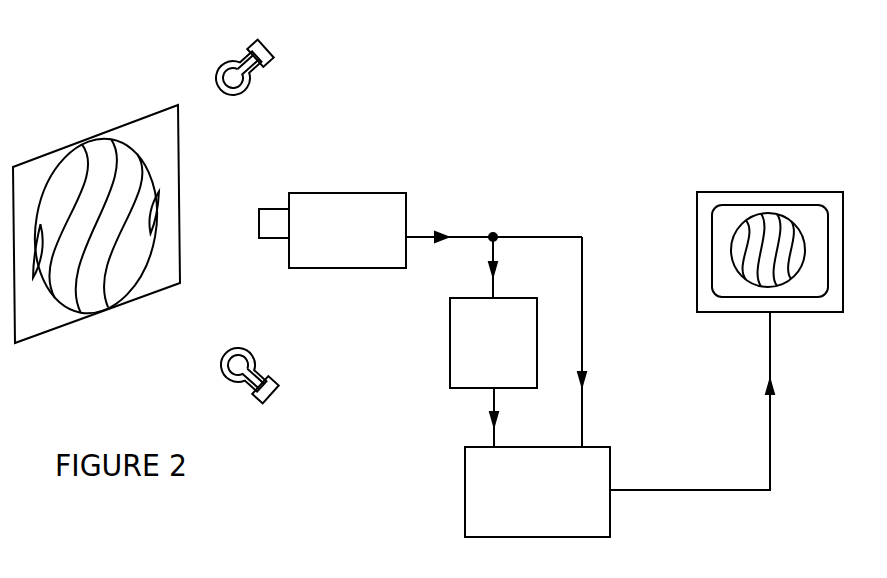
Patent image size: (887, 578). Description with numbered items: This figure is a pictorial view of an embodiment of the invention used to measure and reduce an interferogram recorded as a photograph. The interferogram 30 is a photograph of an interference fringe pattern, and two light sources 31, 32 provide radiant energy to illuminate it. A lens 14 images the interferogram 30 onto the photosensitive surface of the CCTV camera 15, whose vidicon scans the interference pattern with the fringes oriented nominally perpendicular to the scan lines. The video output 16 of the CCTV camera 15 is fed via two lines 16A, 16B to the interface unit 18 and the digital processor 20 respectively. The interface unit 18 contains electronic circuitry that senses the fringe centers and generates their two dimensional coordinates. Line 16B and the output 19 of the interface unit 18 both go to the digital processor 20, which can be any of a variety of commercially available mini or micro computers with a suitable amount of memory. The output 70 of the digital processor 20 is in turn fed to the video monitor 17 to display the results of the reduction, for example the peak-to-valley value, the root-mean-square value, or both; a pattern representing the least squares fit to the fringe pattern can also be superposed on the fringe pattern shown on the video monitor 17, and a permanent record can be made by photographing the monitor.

The interferogram 30 is at (86, 140).
The light source 31 is at (226, 378).
The light source 32 is at (218, 64).
The lens 14 is at (272, 208).
The CCTV camera 15 is at (320, 193).
The video output 16 is at (426, 237).
The line 16A is at (495, 283).
The line 16B is at (583, 324).
The video monitor 17 is at (770, 192).
The interface unit 18 is at (450, 354).
The output 19 is at (494, 404).
The digital processor 20 is at (465, 479).
The output 70 is at (687, 490).